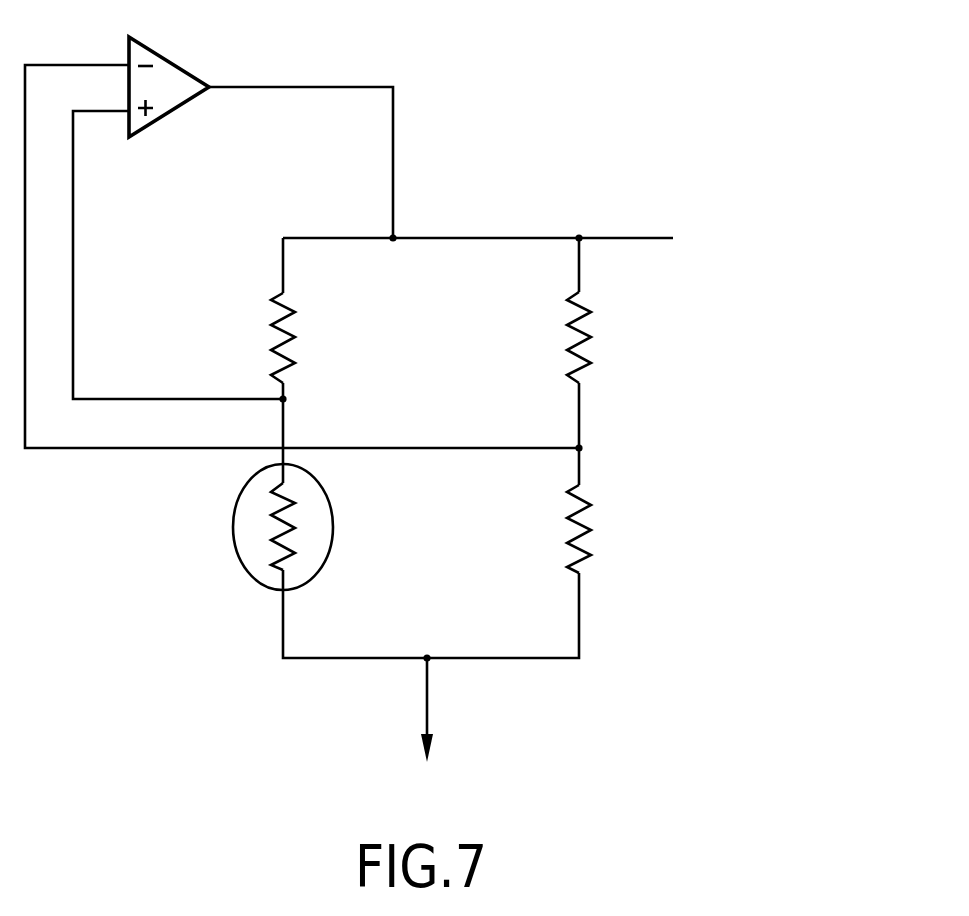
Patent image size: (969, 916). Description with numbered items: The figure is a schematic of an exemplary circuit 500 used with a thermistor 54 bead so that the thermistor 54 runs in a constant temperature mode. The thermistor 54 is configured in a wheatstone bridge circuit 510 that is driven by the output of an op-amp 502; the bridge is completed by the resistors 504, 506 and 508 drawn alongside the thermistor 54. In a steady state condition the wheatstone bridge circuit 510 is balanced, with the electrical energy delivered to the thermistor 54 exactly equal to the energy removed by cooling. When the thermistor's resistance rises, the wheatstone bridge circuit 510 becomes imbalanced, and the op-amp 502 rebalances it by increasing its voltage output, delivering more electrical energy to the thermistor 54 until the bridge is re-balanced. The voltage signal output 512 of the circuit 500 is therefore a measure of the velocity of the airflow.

The circuit 500 is at (562, 115).
The op-amp 502 is at (179, 64).
The resistor 504 is at (296, 340).
The resistor 506 is at (589, 338).
The resistor 508 is at (589, 527).
The wheatstone bridge circuit 510 is at (683, 453).
The voltage signal output 512 is at (643, 237).
The thermistor 54 is at (248, 568).